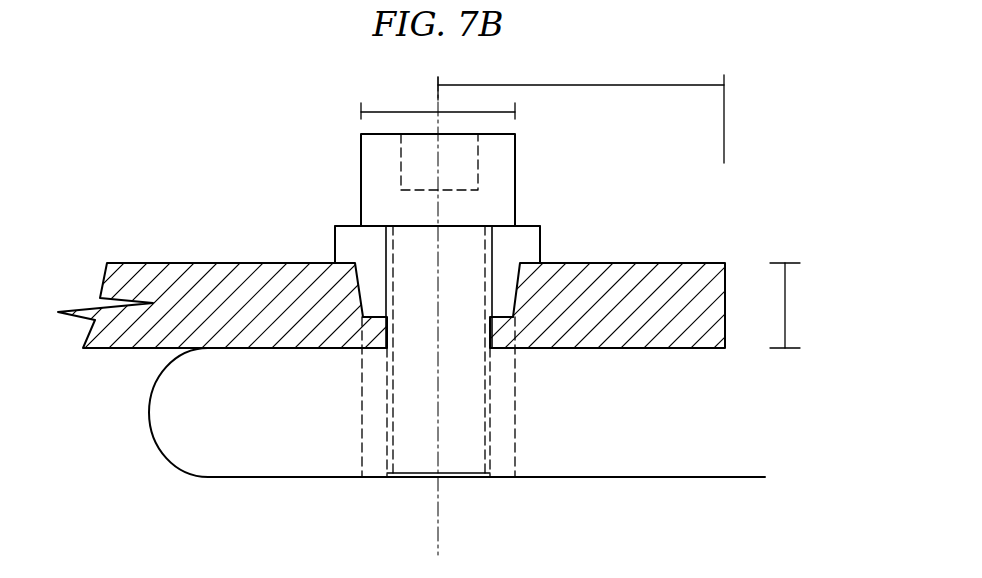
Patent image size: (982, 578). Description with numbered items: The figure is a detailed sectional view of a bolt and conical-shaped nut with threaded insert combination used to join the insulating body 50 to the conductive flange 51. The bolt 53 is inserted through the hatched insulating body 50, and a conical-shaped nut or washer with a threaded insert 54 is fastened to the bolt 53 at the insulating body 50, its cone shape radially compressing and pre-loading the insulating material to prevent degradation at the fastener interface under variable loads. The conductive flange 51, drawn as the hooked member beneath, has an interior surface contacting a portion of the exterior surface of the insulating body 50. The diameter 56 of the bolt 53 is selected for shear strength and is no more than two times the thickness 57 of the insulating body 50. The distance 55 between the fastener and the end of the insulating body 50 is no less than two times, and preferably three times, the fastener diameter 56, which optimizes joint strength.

The insulating body 50 is at (705, 280).
The conductive flange 51 is at (700, 457).
The bolt 53 is at (517, 168).
The conical-shaped nut or washer with a threaded insert 54 is at (536, 248).
The distance 55 is at (642, 85).
The diameter of fastener or bolt 56 is at (403, 112).
The thickness of insulating body 57 is at (786, 298).